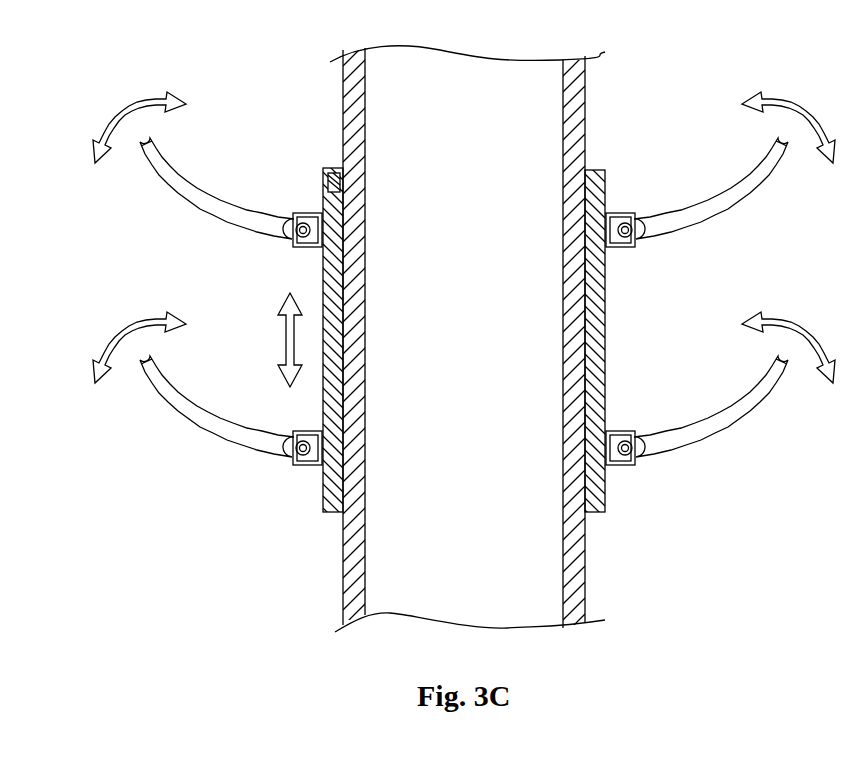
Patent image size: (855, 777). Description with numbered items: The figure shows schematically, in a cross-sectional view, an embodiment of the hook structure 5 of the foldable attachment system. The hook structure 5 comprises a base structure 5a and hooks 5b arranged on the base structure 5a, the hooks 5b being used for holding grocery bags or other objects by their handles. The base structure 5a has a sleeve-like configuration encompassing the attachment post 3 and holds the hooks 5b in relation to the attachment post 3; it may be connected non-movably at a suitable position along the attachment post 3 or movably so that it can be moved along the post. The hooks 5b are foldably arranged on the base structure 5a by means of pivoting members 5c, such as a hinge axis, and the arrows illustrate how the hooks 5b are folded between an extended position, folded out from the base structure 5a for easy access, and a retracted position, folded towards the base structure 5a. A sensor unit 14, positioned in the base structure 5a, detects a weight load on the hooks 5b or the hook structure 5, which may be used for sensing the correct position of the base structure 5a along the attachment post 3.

The attachment post 3 is at (588, 108).
The hook structure 5 is at (272, 105).
The base structure 5a is at (605, 337).
The hooks 5b is at (210, 197).
The pivoting members 5c is at (298, 246).
The sensor unit 14 is at (328, 178).